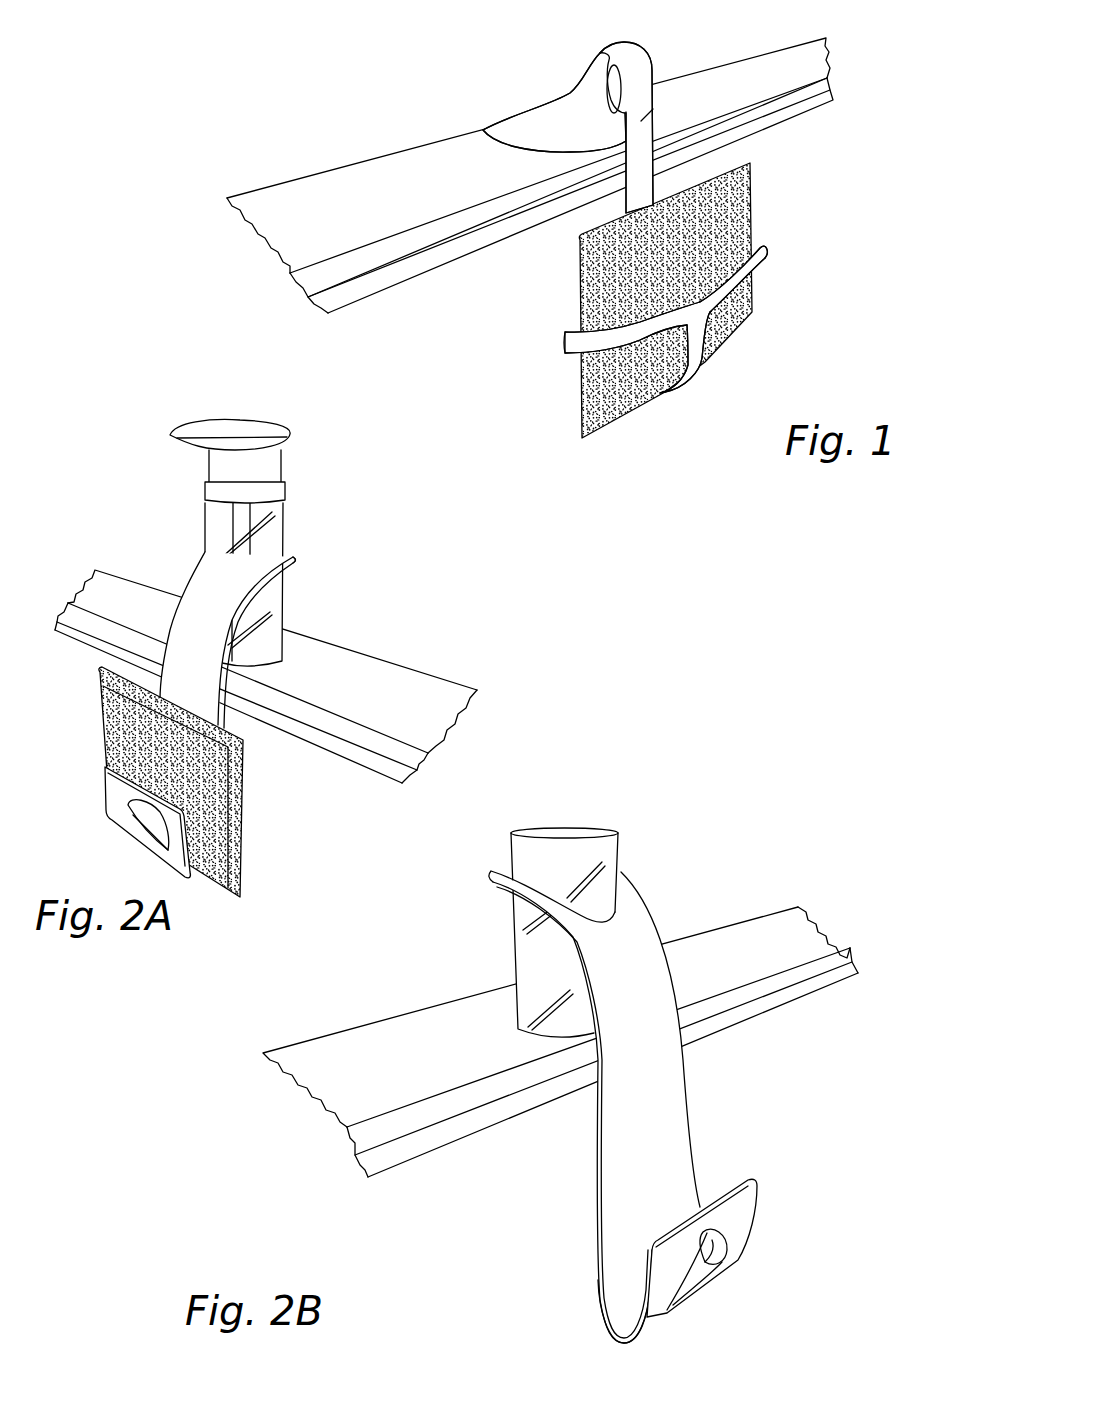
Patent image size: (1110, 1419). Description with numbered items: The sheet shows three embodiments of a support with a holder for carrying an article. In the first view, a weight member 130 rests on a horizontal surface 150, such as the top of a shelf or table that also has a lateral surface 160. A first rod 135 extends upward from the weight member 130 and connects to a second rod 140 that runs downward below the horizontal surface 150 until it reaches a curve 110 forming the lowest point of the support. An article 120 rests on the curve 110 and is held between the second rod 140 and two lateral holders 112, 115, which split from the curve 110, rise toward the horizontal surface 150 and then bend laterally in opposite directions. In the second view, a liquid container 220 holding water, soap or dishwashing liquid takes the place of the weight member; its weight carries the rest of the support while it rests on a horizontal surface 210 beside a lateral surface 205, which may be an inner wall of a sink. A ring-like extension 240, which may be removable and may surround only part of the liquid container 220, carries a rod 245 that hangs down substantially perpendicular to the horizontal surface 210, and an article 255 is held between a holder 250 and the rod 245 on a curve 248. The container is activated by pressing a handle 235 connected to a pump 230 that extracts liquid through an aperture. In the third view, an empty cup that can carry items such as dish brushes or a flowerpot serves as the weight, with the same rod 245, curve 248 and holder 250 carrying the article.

In FIG. 1, the curve 110 is at (660, 392).
In FIG. 1, the lateral holder 112 is at (565, 342).
In FIG. 1, the lateral holder 115 is at (762, 245).
In FIG. 1, the article 120 is at (752, 305).
In FIG. 1, the weight member 130 is at (527, 112).
In FIG. 1, the first rod 135 is at (627, 55).
In FIG. 1, the second rod 140 is at (653, 113).
In FIG. 1, the horizontal surface 150 is at (827, 40).
In FIG. 1, the lateral surface 160 is at (828, 102).
In FIG. 2A, the lateral surface 205 is at (420, 760).
In FIG. 2B, the lateral surface 205 is at (850, 948).
In FIG. 2A, the horizontal surface 210 is at (428, 683).
In FIG. 2B, the horizontal surface 210 is at (303, 1085).
In FIG. 2A, the liquid container 220 is at (280, 617).
In FIG. 2A, the pump 230 is at (282, 460).
In FIG. 2A, the handle 235 is at (222, 427).
In FIG. 2A, the ring-like extension 240 is at (293, 557).
In FIG. 2A, the rod 245 is at (200, 570).
In FIG. 2B, the rod 245 is at (637, 910).
In FIG. 2B, the curve 248 is at (607, 1334).
In FIG. 2A, the holder 250 is at (180, 848).
In FIG. 2B, the holder 250 is at (657, 1313).
In FIG. 2A, the article 255 is at (243, 853).